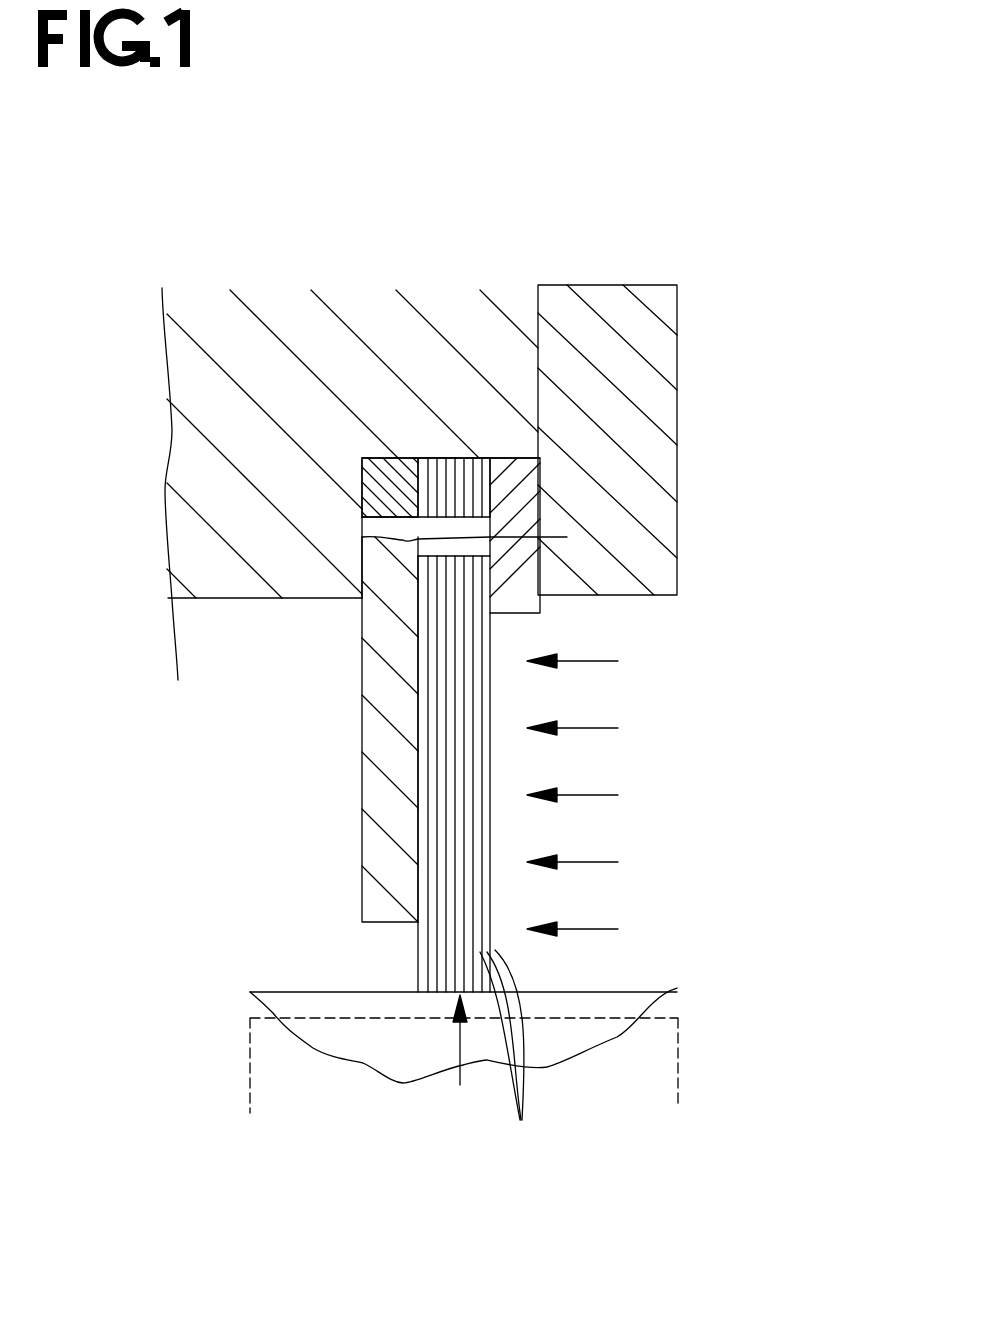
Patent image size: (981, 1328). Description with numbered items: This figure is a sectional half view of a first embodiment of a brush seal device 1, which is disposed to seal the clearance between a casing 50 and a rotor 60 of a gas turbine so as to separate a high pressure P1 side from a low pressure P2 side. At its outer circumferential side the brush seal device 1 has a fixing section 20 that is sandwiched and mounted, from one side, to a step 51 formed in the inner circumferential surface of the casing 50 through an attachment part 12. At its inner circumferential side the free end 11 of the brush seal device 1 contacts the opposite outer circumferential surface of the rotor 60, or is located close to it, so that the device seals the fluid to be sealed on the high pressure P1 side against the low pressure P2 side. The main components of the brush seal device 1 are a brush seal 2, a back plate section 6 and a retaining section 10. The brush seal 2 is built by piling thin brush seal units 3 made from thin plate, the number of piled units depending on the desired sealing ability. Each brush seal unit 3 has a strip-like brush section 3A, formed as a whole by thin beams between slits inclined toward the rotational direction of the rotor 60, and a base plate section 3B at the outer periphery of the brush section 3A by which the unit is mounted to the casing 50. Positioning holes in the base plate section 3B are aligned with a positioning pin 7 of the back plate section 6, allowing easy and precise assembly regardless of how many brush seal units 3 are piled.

The brush seal device 1 is at (516, 404).
The brush seal 2 is at (448, 760).
The brush seal unit 3 is at (506, 1052).
The brush section 3A is at (480, 900).
The base plate section 3B is at (457, 490).
The back plate section 6 is at (403, 617).
The positioning pin 7 is at (437, 530).
The retaining section 10 is at (520, 520).
The free end 11 is at (435, 975).
The attachment part 12 is at (615, 423).
The fixing section 20 is at (393, 490).
The casing 50 is at (217, 340).
The step 51 is at (386, 462).
The rotor 60 is at (645, 1000).
The high pressure side P1 is at (627, 795).
The low pressure side P2 is at (225, 889).